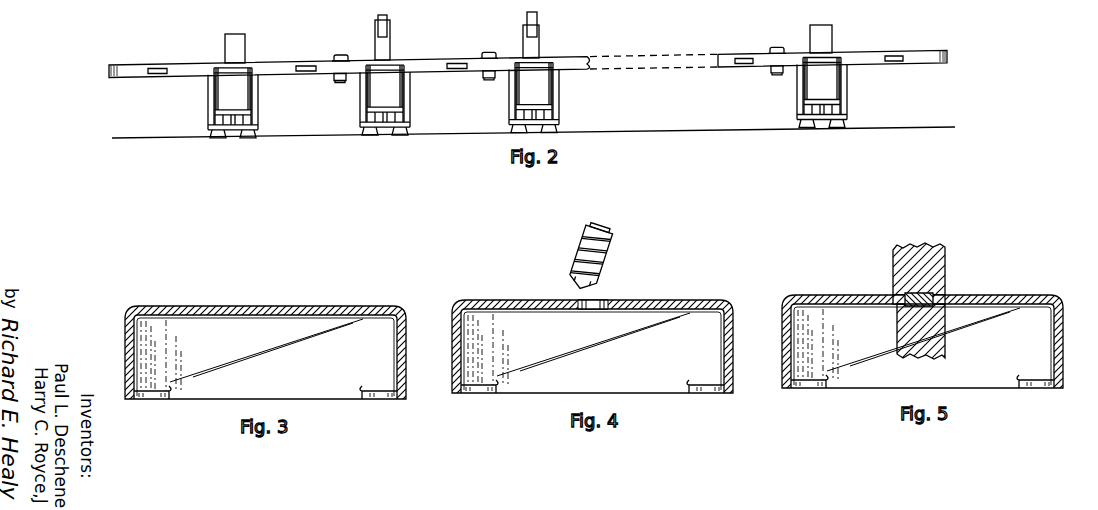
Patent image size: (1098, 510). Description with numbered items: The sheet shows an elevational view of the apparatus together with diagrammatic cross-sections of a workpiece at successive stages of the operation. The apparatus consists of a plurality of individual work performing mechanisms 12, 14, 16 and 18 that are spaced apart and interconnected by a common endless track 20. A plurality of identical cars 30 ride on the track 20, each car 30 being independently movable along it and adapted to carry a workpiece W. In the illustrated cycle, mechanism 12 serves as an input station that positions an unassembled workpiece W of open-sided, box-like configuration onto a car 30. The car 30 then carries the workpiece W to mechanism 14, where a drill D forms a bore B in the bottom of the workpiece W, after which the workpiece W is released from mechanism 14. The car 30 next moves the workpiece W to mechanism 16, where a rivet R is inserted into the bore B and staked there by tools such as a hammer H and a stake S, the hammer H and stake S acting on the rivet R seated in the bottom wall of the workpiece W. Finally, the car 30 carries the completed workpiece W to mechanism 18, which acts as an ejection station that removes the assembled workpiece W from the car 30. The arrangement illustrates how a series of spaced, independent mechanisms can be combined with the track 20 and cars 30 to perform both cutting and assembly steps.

In FIG. 2, the work performing mechanism 12 is at (240, 40).
In FIG. 2, the work performing mechanism 14 is at (386, 42).
In FIG. 2, the work performing mechanism 16 is at (535, 37).
In FIG. 2, the work performing mechanism 18 is at (815, 33).
In FIG. 2, the endless track 20 is at (930, 52).
In FIG. 2, the car 30 is at (336, 83).
In FIG. 2, the workpiece W is at (339, 55).
In FIG. 3, the workpiece W is at (277, 306).
In FIG. 4, the workpiece W is at (688, 300).
In FIG. 5, the workpiece W is at (1015, 295).
In FIG. 4, the drill D is at (576, 250).
In FIG. 4, the bore B is at (603, 299).
In FIG. 5, the hammer H is at (903, 275).
In FIG. 5, the rivet R is at (940, 288).
In FIG. 5, the stake S is at (912, 340).